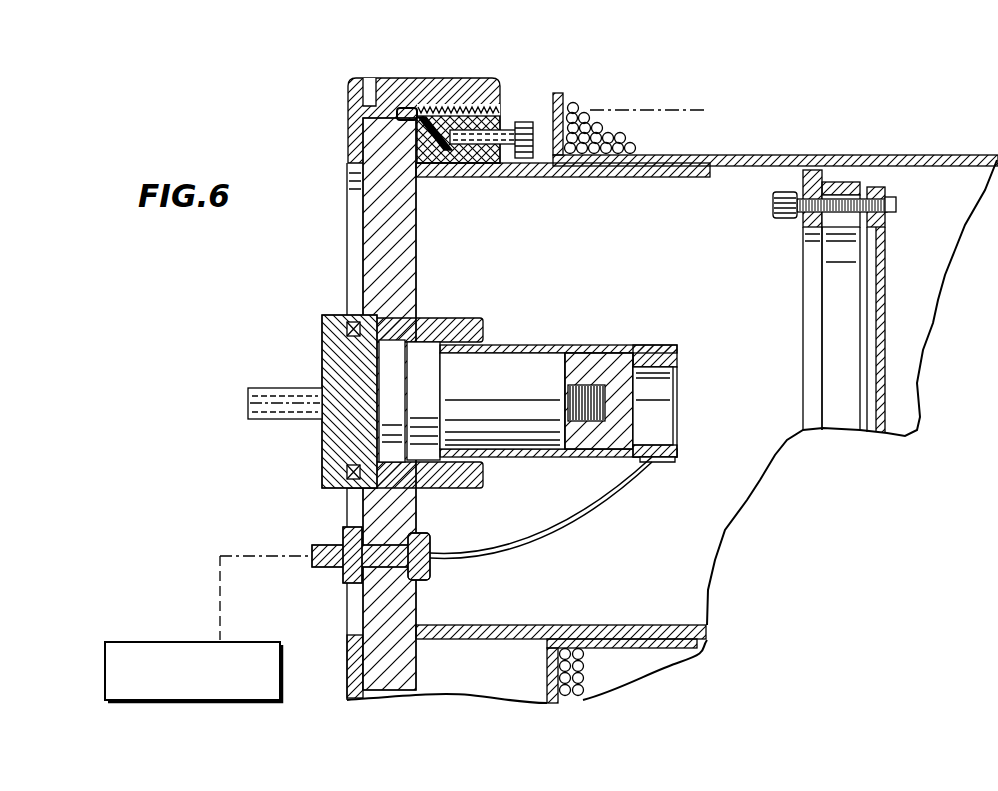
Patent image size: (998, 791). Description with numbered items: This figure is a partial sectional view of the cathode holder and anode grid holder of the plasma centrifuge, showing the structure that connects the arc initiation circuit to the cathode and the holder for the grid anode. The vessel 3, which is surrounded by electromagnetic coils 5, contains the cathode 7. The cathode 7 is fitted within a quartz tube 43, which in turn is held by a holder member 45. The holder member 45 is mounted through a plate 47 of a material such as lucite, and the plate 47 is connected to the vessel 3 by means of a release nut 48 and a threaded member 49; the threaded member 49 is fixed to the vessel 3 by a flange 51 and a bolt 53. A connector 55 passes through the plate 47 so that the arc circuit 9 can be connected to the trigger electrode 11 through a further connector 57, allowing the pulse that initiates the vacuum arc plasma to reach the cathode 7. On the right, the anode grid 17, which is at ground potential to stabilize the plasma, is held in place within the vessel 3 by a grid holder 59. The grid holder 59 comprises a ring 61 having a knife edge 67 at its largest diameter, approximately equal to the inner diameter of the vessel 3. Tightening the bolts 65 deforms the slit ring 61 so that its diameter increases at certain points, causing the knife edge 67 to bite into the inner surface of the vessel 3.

The vessel 3 is at (747, 155).
The electromagnetic coils 5 is at (588, 106).
The cathode 7 is at (607, 364).
The arc circuit 9 is at (280, 700).
The trigger electrode 11 is at (663, 465).
The anode grid 17 is at (893, 255).
The quartz tube 43 is at (522, 346).
The holder member 45 is at (463, 318).
The plate 47 is at (407, 236).
The release nut 48 is at (439, 78).
The threaded member 49 is at (508, 108).
The flange 51 is at (563, 183).
The bolt 53 is at (530, 108).
The connector 55 is at (340, 574).
The connector 57 is at (582, 523).
The grid holder 59 is at (794, 352).
The ring 61 is at (800, 296).
The bolts 65 is at (780, 222).
The knife edge 67 is at (813, 168).